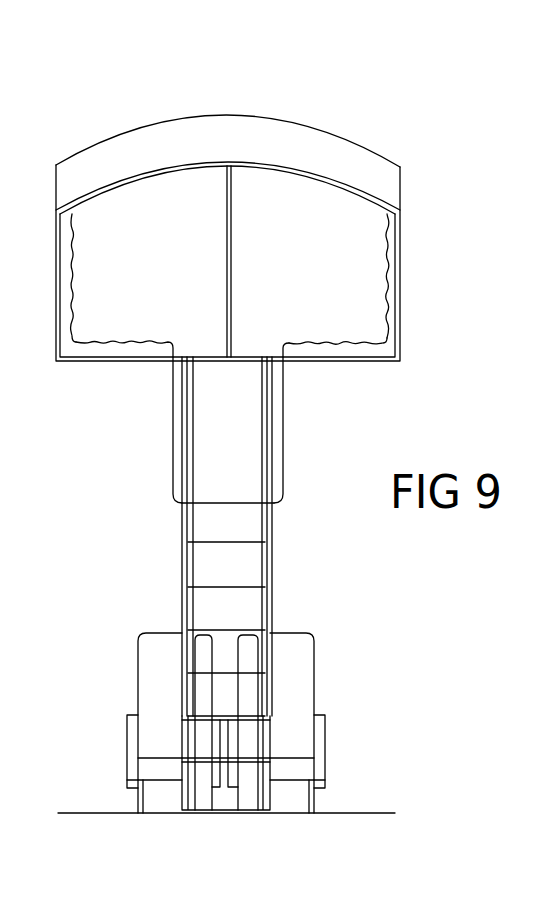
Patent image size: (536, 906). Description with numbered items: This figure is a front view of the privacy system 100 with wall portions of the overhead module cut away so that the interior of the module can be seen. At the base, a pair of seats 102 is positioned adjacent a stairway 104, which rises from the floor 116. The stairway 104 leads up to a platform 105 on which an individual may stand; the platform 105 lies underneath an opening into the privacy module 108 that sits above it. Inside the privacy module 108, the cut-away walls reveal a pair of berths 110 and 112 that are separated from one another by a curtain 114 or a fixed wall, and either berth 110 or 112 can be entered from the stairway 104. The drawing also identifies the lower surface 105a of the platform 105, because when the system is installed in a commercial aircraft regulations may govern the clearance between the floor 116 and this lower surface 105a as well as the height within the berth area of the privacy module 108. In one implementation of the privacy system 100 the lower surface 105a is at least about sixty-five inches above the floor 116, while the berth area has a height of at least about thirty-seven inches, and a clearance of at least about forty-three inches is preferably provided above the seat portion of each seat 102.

The privacy system 100 is at (112, 122).
The seats 102 is at (150, 663).
The stairway 104 is at (192, 568).
The platform 105 is at (287, 421).
The lower surface of platform 105a is at (232, 503).
The privacy module 108 is at (407, 343).
The berth 110 is at (167, 248).
The berth 112 is at (327, 248).
The curtain 114 is at (231, 287).
The floor 116 is at (97, 812).